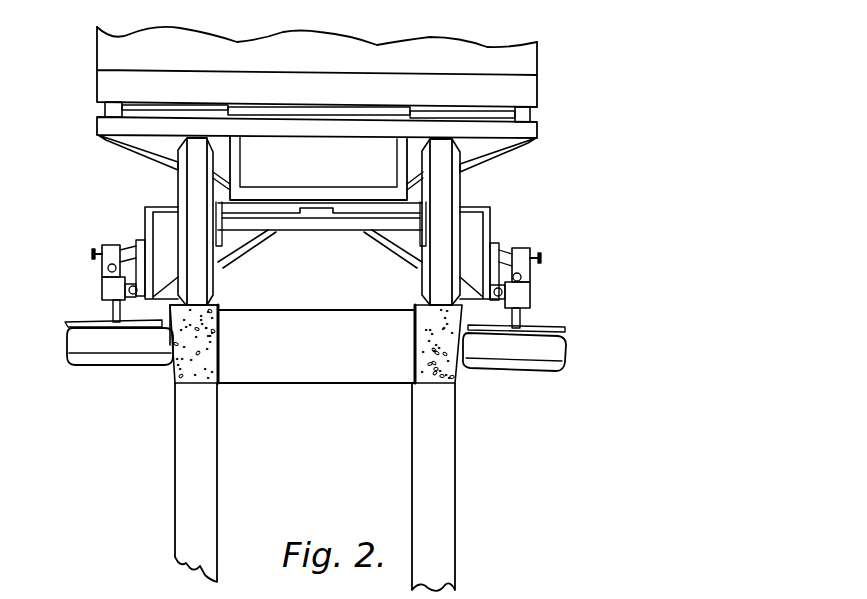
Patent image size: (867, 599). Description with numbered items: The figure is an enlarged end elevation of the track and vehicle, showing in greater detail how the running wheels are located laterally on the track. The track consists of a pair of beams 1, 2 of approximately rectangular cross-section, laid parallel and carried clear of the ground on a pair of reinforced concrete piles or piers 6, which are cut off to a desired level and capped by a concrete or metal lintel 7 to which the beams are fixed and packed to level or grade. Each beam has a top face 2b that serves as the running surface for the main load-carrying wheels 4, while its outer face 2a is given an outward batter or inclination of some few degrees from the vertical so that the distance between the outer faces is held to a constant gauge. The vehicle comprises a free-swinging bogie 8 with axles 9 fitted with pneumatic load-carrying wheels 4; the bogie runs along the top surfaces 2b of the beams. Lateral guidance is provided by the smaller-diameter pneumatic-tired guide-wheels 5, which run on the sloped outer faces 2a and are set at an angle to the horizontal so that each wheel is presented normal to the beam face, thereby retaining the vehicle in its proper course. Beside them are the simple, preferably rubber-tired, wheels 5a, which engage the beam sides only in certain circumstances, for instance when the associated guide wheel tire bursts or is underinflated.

The beam 1 is at (458, 373).
The beam 2 is at (175, 382).
The outer face 2a is at (172, 365).
The top face 2b is at (212, 302).
The load-carrying wheels 4 is at (193, 181).
The guide-wheels 5 is at (83, 350).
The wheels 5a is at (78, 322).
The piles or piers 6 is at (200, 537).
The lintel 7 is at (336, 370).
The bogie 8 is at (235, 157).
The axle 9 is at (314, 226).